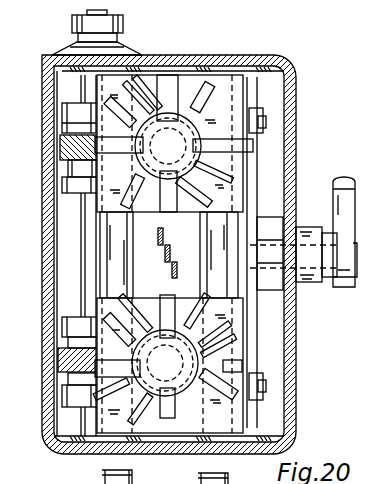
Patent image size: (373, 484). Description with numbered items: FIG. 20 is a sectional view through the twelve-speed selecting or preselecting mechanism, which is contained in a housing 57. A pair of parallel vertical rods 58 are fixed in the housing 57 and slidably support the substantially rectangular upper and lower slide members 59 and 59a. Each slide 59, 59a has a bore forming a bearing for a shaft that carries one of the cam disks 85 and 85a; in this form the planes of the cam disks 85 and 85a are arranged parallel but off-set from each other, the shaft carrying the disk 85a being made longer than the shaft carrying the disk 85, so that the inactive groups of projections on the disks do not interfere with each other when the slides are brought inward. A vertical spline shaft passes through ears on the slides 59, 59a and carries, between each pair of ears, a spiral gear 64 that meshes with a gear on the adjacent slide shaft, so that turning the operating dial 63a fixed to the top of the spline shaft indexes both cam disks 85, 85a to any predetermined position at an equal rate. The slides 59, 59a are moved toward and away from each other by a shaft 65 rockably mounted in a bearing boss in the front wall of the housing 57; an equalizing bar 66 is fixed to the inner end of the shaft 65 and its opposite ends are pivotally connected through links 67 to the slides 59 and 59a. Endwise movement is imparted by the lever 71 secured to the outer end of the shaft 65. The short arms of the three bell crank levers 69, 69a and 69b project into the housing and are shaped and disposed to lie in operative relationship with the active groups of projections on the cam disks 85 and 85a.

The housing 57 is at (296, 107).
The parallel vertical rods 58 is at (107, 260).
The upper slide member 59 is at (220, 99).
The lower slide member 59a is at (217, 425).
The operating dial 63a is at (135, 48).
The spiral gear 64 is at (60, 148).
The shaft 65 is at (308, 283).
The equalizing bar 66 is at (295, 202).
The links 67 is at (262, 163).
The bell crank lever 69 is at (158, 237).
The bell crank lever 69a is at (170, 252).
The third bell crank lever 69b is at (175, 272).
The lever 71 is at (333, 193).
The cam disk 85 is at (190, 103).
The cam disk 85a is at (174, 402).